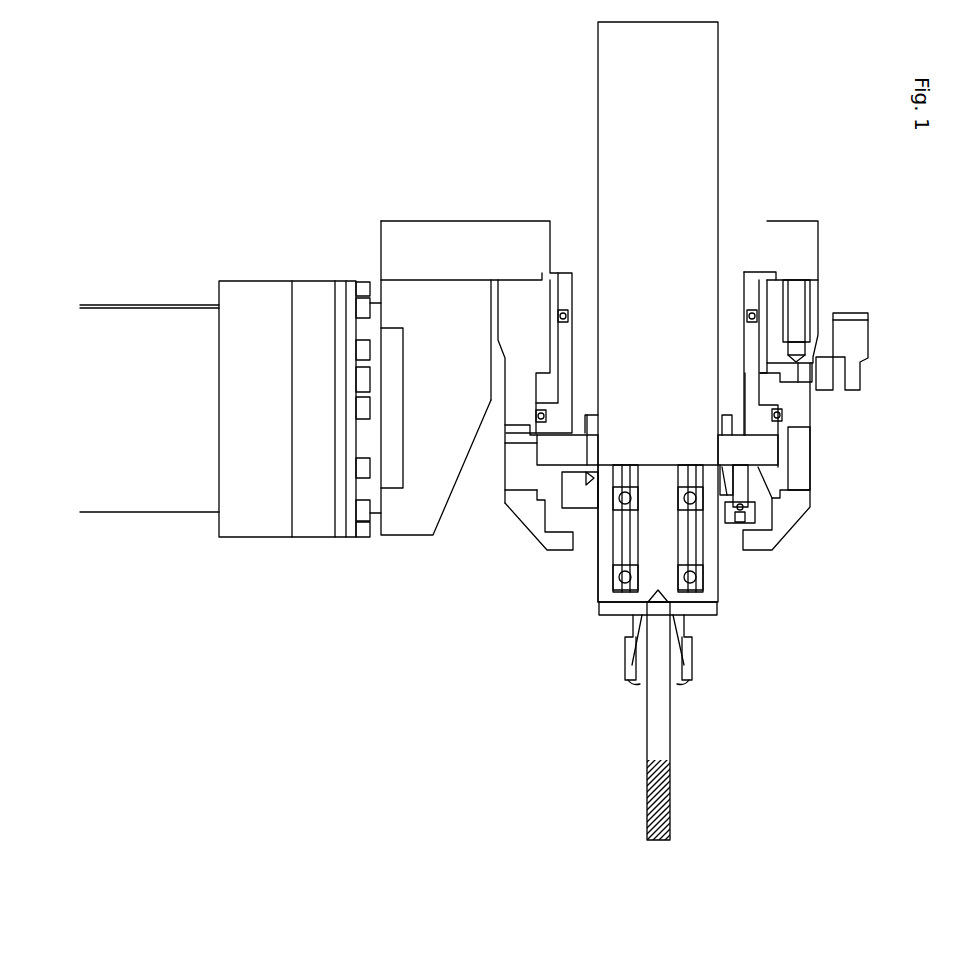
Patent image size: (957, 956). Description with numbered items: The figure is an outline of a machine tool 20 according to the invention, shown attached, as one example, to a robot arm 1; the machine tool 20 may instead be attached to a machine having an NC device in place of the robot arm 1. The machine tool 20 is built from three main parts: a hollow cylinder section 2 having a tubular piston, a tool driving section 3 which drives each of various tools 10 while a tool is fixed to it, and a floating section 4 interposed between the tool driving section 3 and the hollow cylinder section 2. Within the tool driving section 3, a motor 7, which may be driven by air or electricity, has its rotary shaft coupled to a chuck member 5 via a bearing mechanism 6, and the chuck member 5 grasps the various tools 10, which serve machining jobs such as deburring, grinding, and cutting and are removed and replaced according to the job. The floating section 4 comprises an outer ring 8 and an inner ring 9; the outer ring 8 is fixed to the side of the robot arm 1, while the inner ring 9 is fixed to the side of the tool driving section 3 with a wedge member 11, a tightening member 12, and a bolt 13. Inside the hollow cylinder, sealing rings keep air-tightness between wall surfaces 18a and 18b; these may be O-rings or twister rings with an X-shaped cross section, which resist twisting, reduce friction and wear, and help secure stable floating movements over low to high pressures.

The machine tool 20 is at (440, 57).
The robot arm 1 is at (139, 308).
The hollow cylinder section 2 is at (573, 272).
The tool driving section 3 is at (719, 105).
The floating section 4 is at (527, 472).
The chuck member 5 is at (718, 610).
The bearing mechanism 6 is at (690, 553).
The motor 7 is at (697, 185).
The outer ring 8 is at (505, 446).
The inner ring 9 is at (722, 437).
The various tools 10 is at (672, 792).
The wedge member 11 is at (588, 488).
The tightening member 12 is at (575, 497).
The bolt 13 is at (745, 532).
The wall surface of the hollow cylinder 18a is at (557, 300).
The wall surface of the hollow cylinder 18b is at (537, 417).